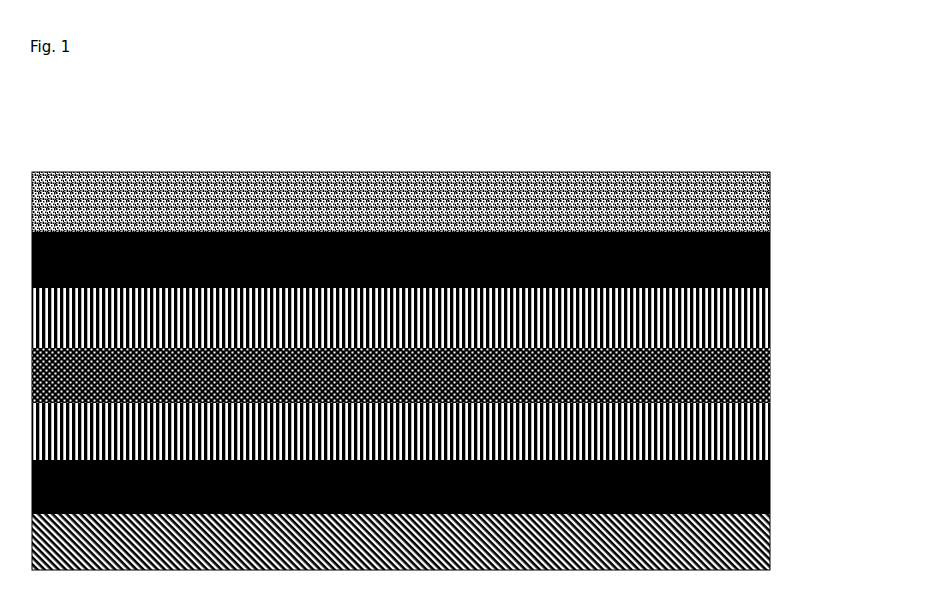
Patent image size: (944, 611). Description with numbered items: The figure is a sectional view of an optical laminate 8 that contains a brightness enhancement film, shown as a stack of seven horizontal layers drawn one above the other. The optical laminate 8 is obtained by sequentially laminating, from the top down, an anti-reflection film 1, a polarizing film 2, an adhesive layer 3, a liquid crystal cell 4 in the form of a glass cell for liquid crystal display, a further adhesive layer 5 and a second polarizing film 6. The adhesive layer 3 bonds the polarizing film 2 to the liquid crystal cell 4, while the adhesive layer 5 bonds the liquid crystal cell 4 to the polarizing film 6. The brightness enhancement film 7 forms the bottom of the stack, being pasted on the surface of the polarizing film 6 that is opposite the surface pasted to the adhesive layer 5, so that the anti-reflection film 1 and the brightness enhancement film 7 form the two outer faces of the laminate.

The anti-reflection film 1 is at (766, 193).
The polarizing film 2 is at (766, 246).
The adhesive layer 3 is at (766, 303).
The liquid crystal cell 4 is at (766, 363).
The adhesive layer 5 is at (766, 420).
The polarizing film 6 is at (766, 474).
The brightness enhancement film 7 is at (766, 532).
The optical laminate 8 is at (363, 149).